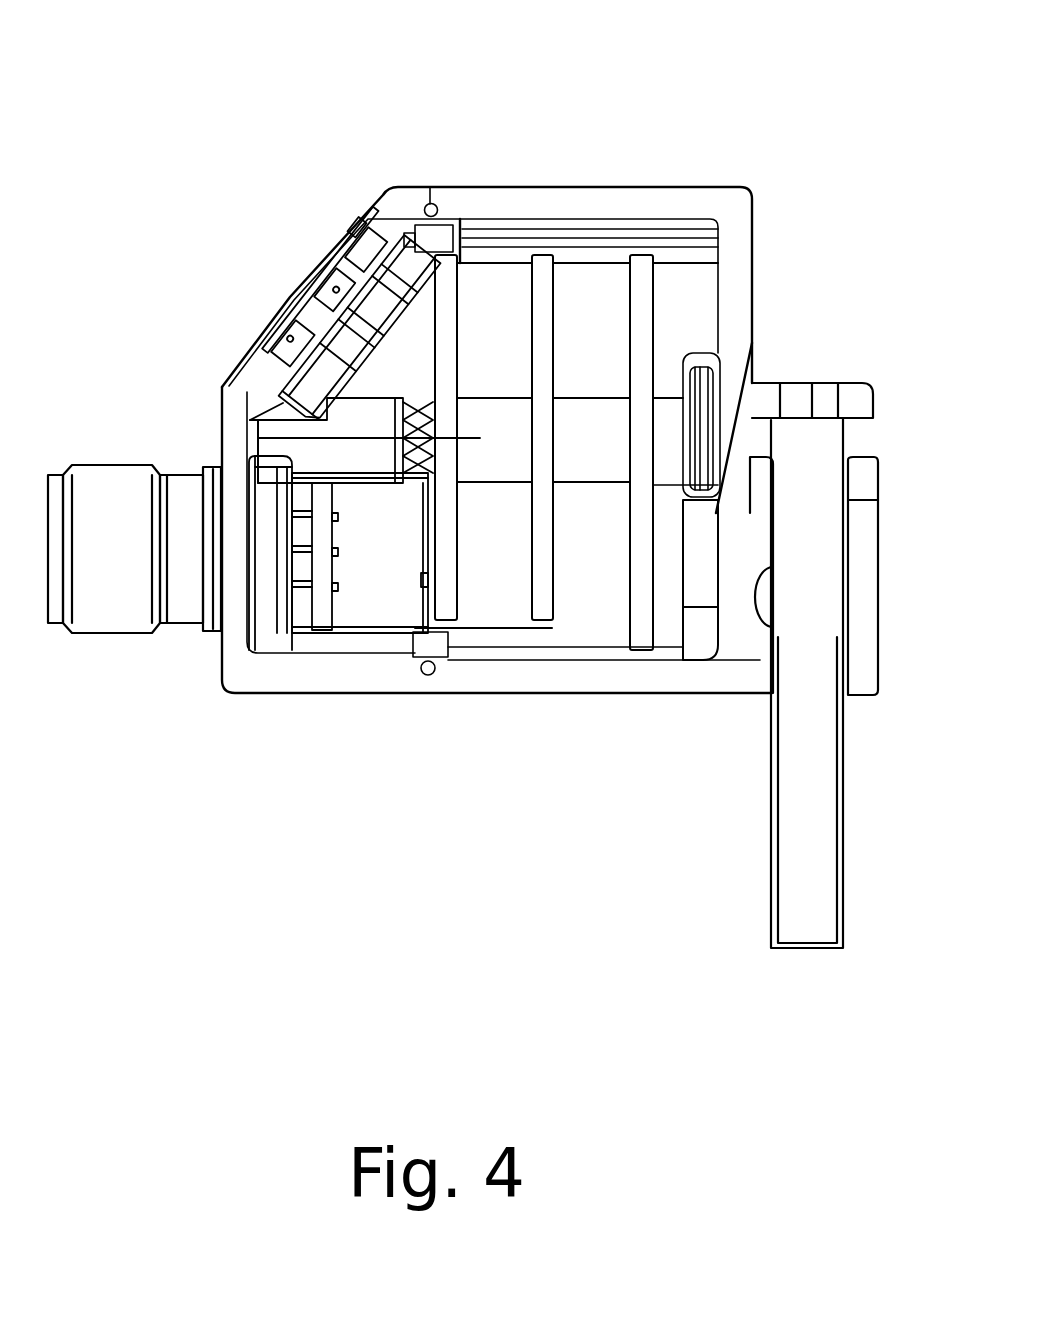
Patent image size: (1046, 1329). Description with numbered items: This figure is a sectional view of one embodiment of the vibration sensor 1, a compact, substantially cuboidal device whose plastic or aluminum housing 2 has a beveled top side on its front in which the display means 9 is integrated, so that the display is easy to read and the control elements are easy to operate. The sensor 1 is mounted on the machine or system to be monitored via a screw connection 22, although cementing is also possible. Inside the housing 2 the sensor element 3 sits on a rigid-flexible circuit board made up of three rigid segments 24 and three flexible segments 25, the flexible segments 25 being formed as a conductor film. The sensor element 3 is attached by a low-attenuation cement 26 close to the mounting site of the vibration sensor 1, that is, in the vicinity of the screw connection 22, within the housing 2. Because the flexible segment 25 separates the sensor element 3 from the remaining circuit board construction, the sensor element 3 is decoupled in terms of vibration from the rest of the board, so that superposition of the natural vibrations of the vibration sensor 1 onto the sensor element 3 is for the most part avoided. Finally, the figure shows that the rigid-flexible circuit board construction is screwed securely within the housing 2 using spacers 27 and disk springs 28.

The vibration sensor 1 is at (196, 183).
The housing 2 is at (642, 203).
The sensor element 3 is at (712, 522).
The display means 9 is at (236, 289).
The screw connection 22 is at (841, 743).
The rigid segments 24 is at (640, 297).
The flexible segments 25 is at (600, 253).
The low-attenuation cement 26 is at (698, 607).
The spacers 27 is at (585, 423).
The disk springs 28 is at (362, 232).